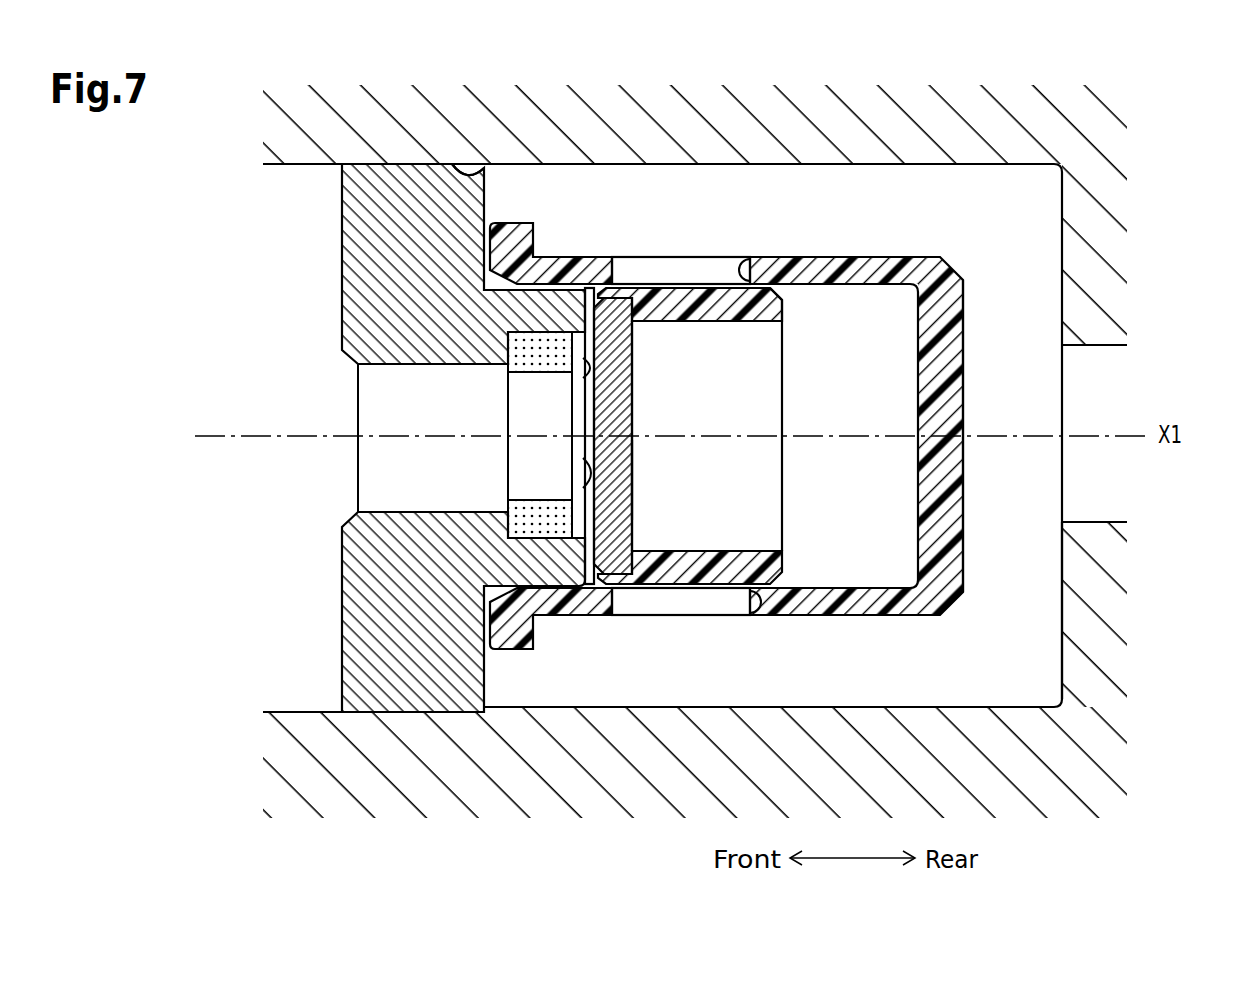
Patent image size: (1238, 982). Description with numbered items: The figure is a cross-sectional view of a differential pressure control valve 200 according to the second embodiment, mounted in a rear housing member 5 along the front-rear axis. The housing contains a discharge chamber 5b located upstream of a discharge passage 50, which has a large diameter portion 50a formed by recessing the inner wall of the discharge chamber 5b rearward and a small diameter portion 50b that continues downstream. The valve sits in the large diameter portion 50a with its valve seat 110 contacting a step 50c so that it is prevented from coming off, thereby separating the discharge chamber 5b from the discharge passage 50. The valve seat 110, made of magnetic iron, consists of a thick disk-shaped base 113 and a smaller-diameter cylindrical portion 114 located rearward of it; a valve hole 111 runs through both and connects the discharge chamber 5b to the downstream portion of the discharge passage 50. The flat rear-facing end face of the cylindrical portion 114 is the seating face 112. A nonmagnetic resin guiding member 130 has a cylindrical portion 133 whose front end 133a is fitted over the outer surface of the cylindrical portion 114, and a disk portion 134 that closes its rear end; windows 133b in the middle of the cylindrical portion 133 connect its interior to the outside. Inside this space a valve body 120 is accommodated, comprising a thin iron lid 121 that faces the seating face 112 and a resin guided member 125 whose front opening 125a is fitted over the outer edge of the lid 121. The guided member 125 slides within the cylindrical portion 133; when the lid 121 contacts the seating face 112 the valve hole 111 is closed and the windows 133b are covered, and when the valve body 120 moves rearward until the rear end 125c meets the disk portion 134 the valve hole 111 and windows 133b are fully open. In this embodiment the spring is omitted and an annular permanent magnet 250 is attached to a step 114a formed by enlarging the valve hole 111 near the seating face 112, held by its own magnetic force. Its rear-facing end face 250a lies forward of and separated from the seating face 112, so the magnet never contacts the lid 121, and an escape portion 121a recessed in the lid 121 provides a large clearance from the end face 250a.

The rear housing member 5 is at (1107, 223).
The discharge passage 50 is at (1129, 352).
The large diameter portion 50a is at (968, 705).
The small diameter portion 50b is at (1105, 520).
The step 50c is at (458, 170).
The discharge chamber 5b is at (309, 675).
The valve seat 110 is at (339, 248).
The valve hole 111 is at (402, 512).
The seating face 112 is at (598, 568).
The base 113 is at (430, 652).
The cylindrical portion 114 is at (560, 562).
The step 114a is at (548, 500).
The valve body 120 is at (652, 281).
The lid 121 is at (633, 380).
The escape portion 121a is at (628, 482).
The guided member 125 is at (695, 568).
The front opening 125a is at (633, 508).
The rear end 125c is at (782, 310).
The guiding member 130 is at (969, 320).
The cylindrical portion 133 is at (858, 275).
The front end 133a is at (517, 282).
The windows 133b is at (752, 258).
The disk portion 134 is at (962, 358).
The differential pressure control valve 200 is at (970, 252).
The permanent magnet 250 is at (540, 363).
The end face 250a is at (583, 375).